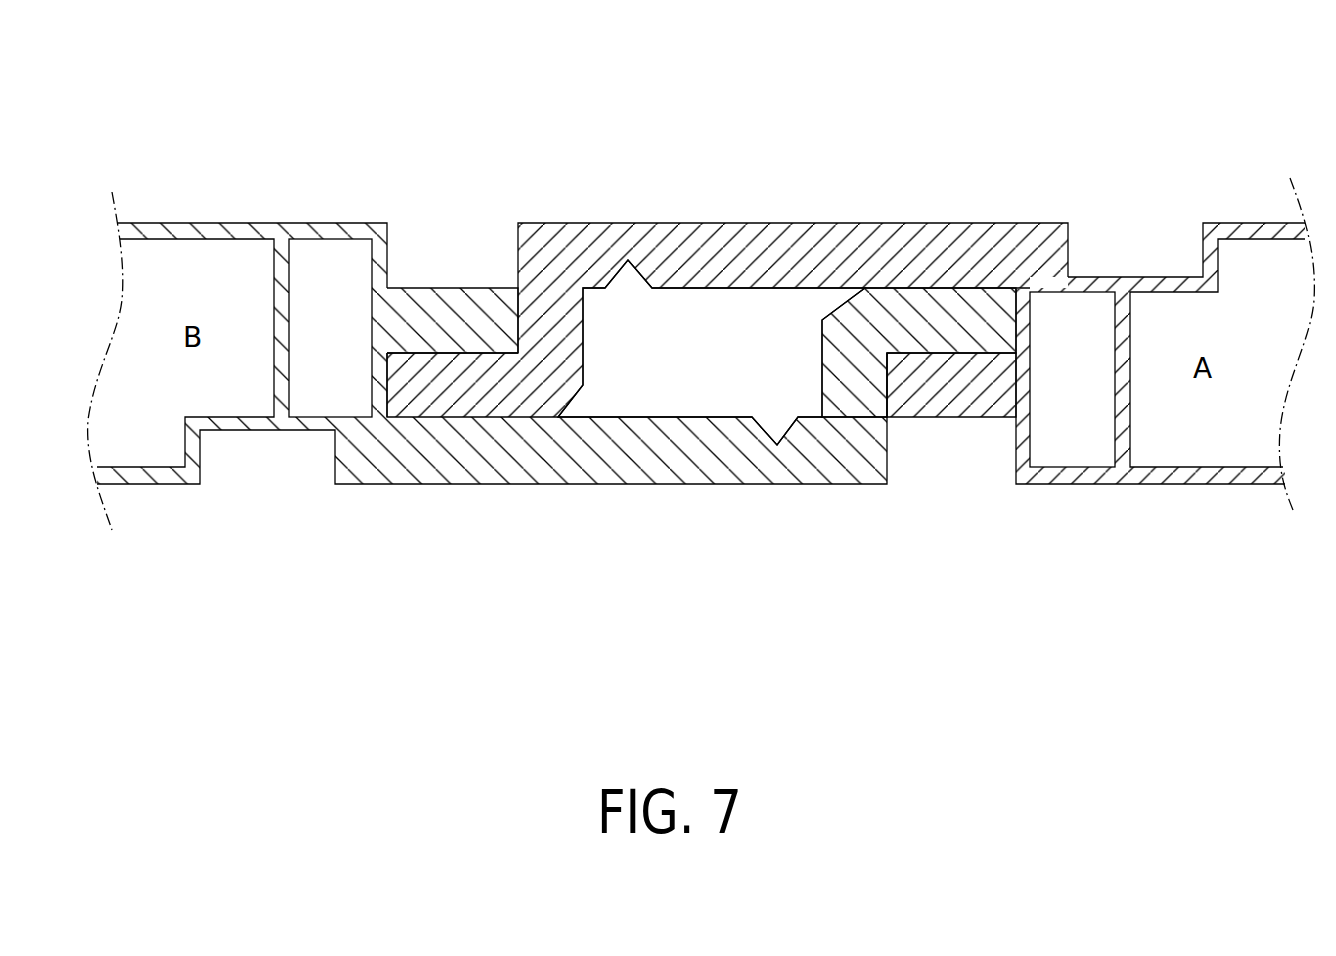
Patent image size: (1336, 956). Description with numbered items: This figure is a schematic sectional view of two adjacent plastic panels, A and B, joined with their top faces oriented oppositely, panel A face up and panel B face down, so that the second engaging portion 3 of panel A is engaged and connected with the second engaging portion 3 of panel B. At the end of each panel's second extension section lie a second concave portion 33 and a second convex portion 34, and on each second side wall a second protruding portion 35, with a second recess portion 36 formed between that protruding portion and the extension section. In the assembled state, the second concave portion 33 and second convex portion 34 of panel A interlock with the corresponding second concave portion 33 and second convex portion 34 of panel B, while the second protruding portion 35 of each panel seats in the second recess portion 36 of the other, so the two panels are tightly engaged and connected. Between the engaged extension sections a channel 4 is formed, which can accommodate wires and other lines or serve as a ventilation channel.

The second engaging portion 3 is at (757, 192).
The channel 4 is at (680, 330).
The second concave portion 33 is at (483, 313).
The second convex portion 34 is at (933, 310).
The second protruding portion 35 is at (437, 312).
The second recess portion 36 is at (1016, 323).